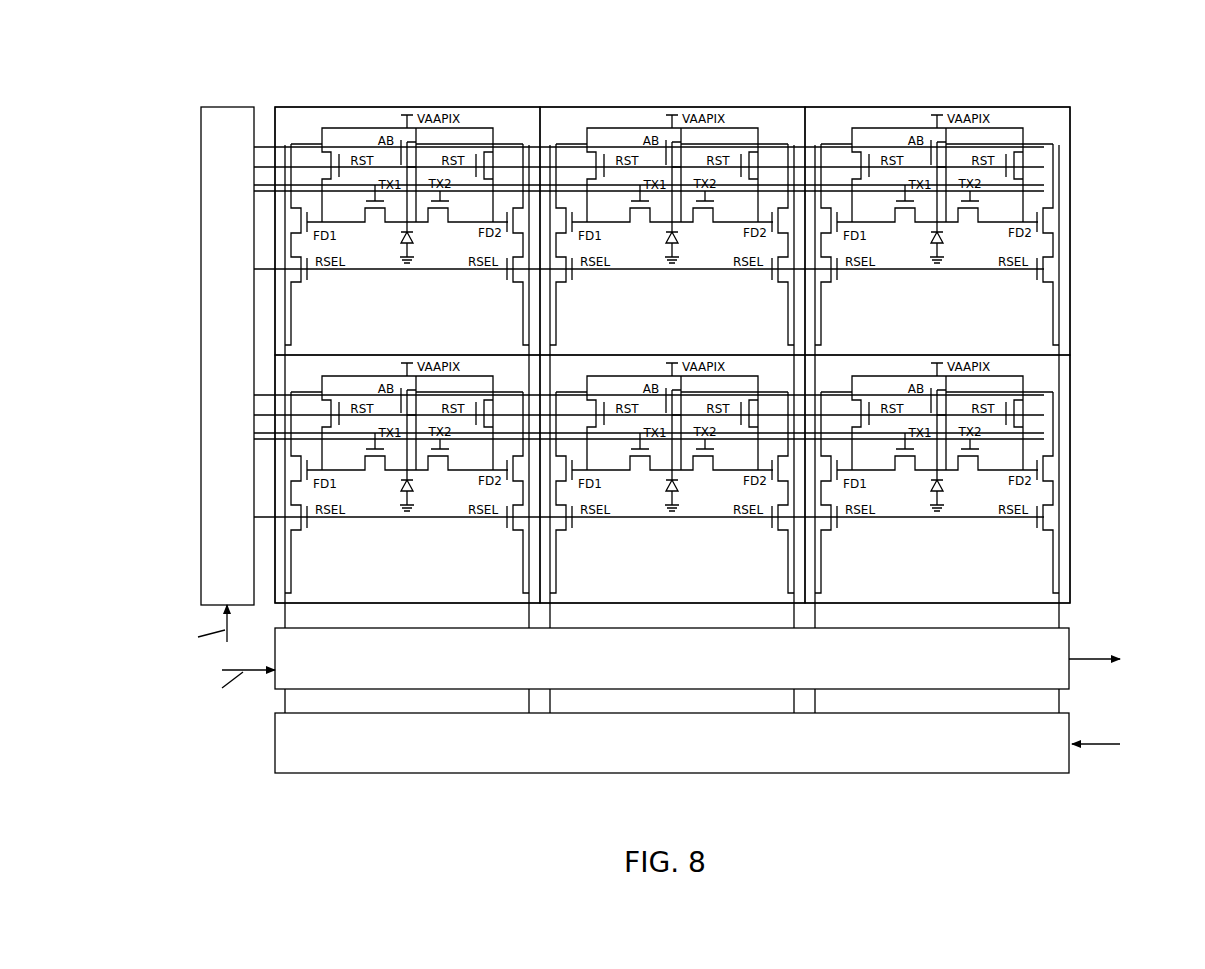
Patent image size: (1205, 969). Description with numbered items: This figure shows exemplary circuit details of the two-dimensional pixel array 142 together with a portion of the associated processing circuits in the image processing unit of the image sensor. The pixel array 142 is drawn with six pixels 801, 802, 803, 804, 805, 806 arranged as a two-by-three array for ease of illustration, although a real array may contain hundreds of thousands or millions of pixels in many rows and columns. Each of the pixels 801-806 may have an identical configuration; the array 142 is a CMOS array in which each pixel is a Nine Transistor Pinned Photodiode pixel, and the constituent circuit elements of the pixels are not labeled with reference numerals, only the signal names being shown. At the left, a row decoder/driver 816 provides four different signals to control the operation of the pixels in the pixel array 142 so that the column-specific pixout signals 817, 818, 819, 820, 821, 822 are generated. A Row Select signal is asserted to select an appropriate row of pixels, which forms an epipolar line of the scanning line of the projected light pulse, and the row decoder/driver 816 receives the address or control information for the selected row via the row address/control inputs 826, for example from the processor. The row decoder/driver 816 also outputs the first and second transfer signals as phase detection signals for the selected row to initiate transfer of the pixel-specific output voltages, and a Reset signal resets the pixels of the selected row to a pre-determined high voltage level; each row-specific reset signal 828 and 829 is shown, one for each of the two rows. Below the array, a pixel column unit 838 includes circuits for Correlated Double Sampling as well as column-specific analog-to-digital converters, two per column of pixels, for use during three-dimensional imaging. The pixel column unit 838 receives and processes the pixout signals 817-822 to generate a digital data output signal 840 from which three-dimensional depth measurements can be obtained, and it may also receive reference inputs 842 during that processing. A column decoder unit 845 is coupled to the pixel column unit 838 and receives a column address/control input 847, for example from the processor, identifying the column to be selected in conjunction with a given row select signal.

The 2D pixel array 142 is at (200, 75).
The row decoder/driver 816 is at (227, 356).
The pixel 801 is at (407, 231).
The pixel 802 is at (672, 231).
The pixel 803 is at (937, 231).
The pixel 804 is at (407, 479).
The pixel 805 is at (672, 479).
The pixel 806 is at (937, 479).
The pixout signal 817 is at (287, 619).
The pixout signal 818 is at (527, 619).
The pixout signal 819 is at (552, 619).
The pixout signal 820 is at (792, 619).
The pixout signal 821 is at (817, 619).
The pixout signal 822 is at (1057, 619).
The row address/control inputs 826 is at (168, 638).
The row-specific RST signal 828 is at (257, 263).
The row-specific RST signal 829 is at (257, 511).
The pixel column unit 838 is at (672, 658).
The digital data output signal 840 is at (1129, 659).
The reference inputs 842 is at (217, 704).
The column decoder unit 845 is at (672, 743).
The column address/control input 847 is at (1137, 751).